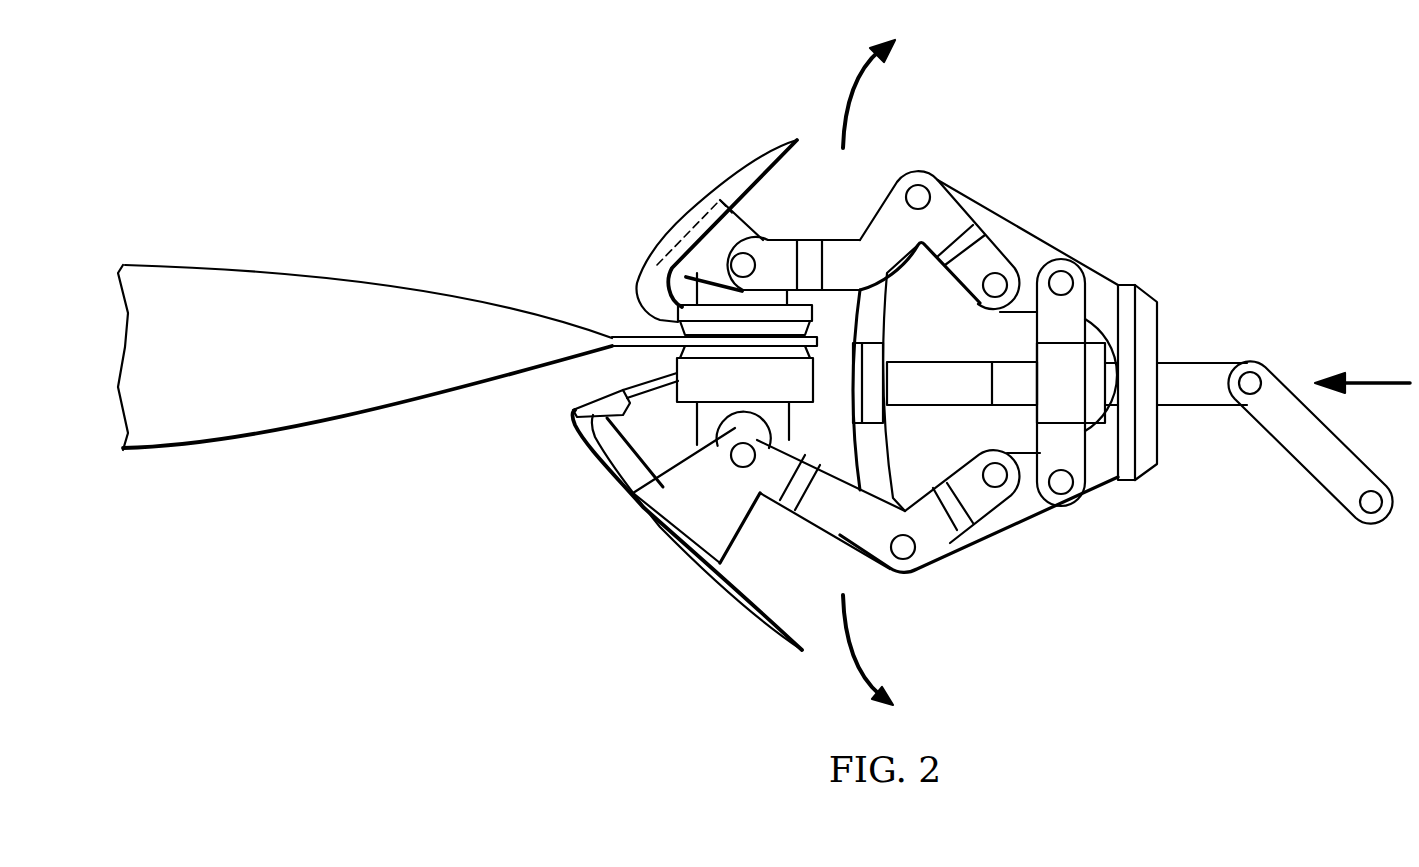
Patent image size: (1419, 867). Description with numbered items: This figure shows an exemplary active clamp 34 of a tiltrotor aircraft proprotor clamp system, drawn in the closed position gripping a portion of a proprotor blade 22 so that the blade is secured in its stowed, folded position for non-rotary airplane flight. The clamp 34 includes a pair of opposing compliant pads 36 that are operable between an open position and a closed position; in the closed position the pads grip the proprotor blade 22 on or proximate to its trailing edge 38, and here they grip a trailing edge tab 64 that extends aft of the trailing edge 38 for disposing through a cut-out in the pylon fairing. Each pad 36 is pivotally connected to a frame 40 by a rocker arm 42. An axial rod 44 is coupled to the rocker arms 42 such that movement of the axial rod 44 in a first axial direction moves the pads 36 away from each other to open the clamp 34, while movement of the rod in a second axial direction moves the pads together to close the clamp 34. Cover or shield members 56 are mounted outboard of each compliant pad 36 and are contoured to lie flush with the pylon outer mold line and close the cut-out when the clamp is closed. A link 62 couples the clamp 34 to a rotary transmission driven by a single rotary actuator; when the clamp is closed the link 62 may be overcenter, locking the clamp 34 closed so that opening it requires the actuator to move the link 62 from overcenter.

The proprotor blade 22 is at (218, 265).
The active clamp 34 is at (1216, 151).
The compliant pad 36 is at (803, 403).
The trailing edge 38 is at (500, 377).
The frame 40 is at (1030, 233).
The rocker arm 42 is at (950, 220).
The axial rod 44 is at (1203, 362).
The cover member 56 is at (680, 223).
The link 62 is at (1308, 470).
The trailing edge tab 64 is at (633, 337).